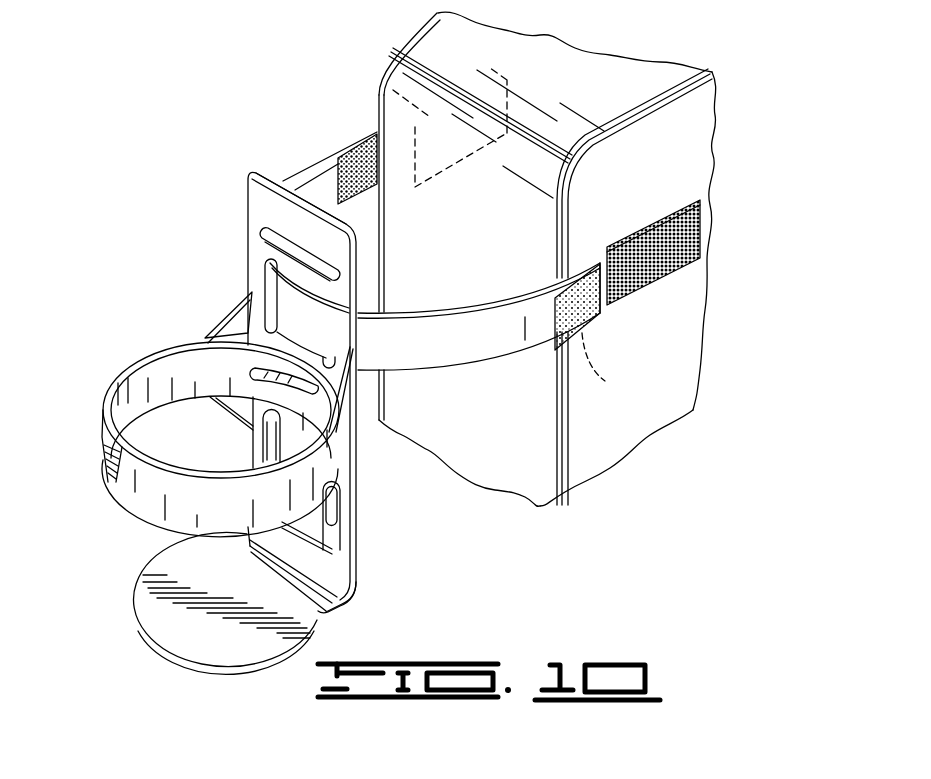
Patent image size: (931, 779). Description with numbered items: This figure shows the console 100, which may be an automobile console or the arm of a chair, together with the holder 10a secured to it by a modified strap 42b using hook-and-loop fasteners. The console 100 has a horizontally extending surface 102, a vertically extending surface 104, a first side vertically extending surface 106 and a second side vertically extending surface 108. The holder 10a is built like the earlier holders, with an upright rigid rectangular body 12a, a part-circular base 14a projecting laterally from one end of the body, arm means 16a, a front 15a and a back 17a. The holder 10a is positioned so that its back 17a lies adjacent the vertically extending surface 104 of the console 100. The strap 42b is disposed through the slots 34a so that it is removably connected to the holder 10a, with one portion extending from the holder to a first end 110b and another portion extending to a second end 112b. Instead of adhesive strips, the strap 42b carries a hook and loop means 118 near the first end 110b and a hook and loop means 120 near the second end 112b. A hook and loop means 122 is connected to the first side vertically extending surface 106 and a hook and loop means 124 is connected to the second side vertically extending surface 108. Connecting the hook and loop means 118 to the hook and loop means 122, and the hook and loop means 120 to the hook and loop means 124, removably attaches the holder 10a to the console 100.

The holder 10a is at (292, 387).
The body 12a is at (257, 448).
The base 14a is at (160, 612).
The front 15a is at (340, 604).
The arm means 16a is at (187, 414).
The back 17a is at (357, 542).
The slots 34a is at (250, 257).
The strap 42b is at (295, 178).
The console 100 is at (236, 367).
The horizontally extending surface 102 is at (564, 263).
The vertically extending surface 104 is at (533, 440).
The first side vertically extending surface 106 is at (437, 14).
The second side vertically extending surface 108 is at (678, 300).
The first end 110b is at (346, 175).
The second end 112b is at (598, 312).
The hook and loop means 118 is at (374, 196).
The hook and loop means 120 is at (527, 330).
The hook and loop means 122 is at (382, 79).
The hook and loop means 124 is at (667, 213).